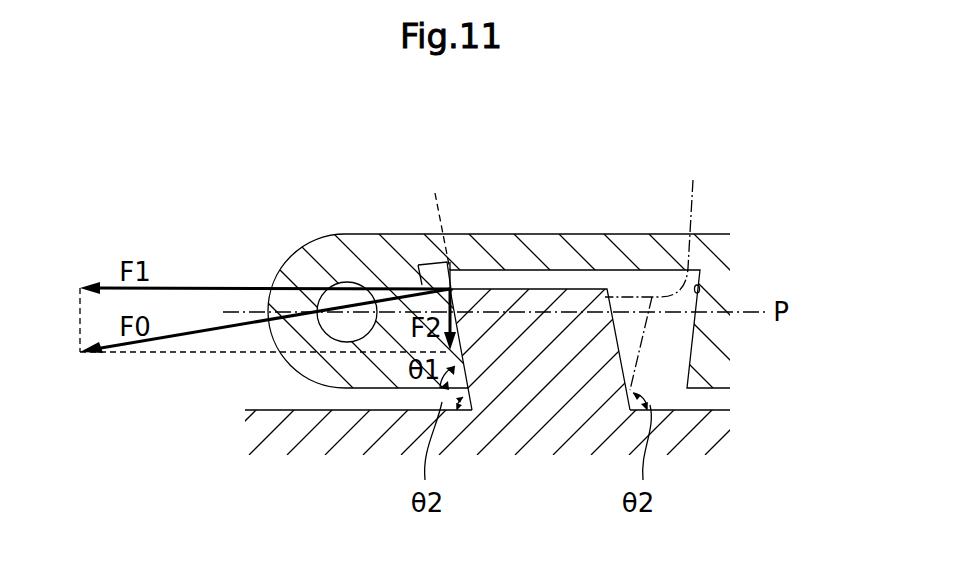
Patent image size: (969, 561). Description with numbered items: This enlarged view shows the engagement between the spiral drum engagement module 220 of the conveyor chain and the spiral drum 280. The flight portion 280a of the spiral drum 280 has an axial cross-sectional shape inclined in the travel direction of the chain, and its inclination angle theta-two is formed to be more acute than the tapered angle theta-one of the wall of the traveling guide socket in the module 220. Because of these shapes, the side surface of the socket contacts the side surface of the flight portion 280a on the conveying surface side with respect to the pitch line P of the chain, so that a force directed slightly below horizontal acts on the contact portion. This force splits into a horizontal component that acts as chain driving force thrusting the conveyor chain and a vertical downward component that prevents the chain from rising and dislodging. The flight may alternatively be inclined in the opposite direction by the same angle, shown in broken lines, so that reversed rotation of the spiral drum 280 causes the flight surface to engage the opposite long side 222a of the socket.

The spiral drum engagement module 220 is at (540, 243).
The opposite long side of the socket 222a is at (698, 286).
The spiral drum 280 is at (695, 438).
The flight portion 280a is at (540, 483).